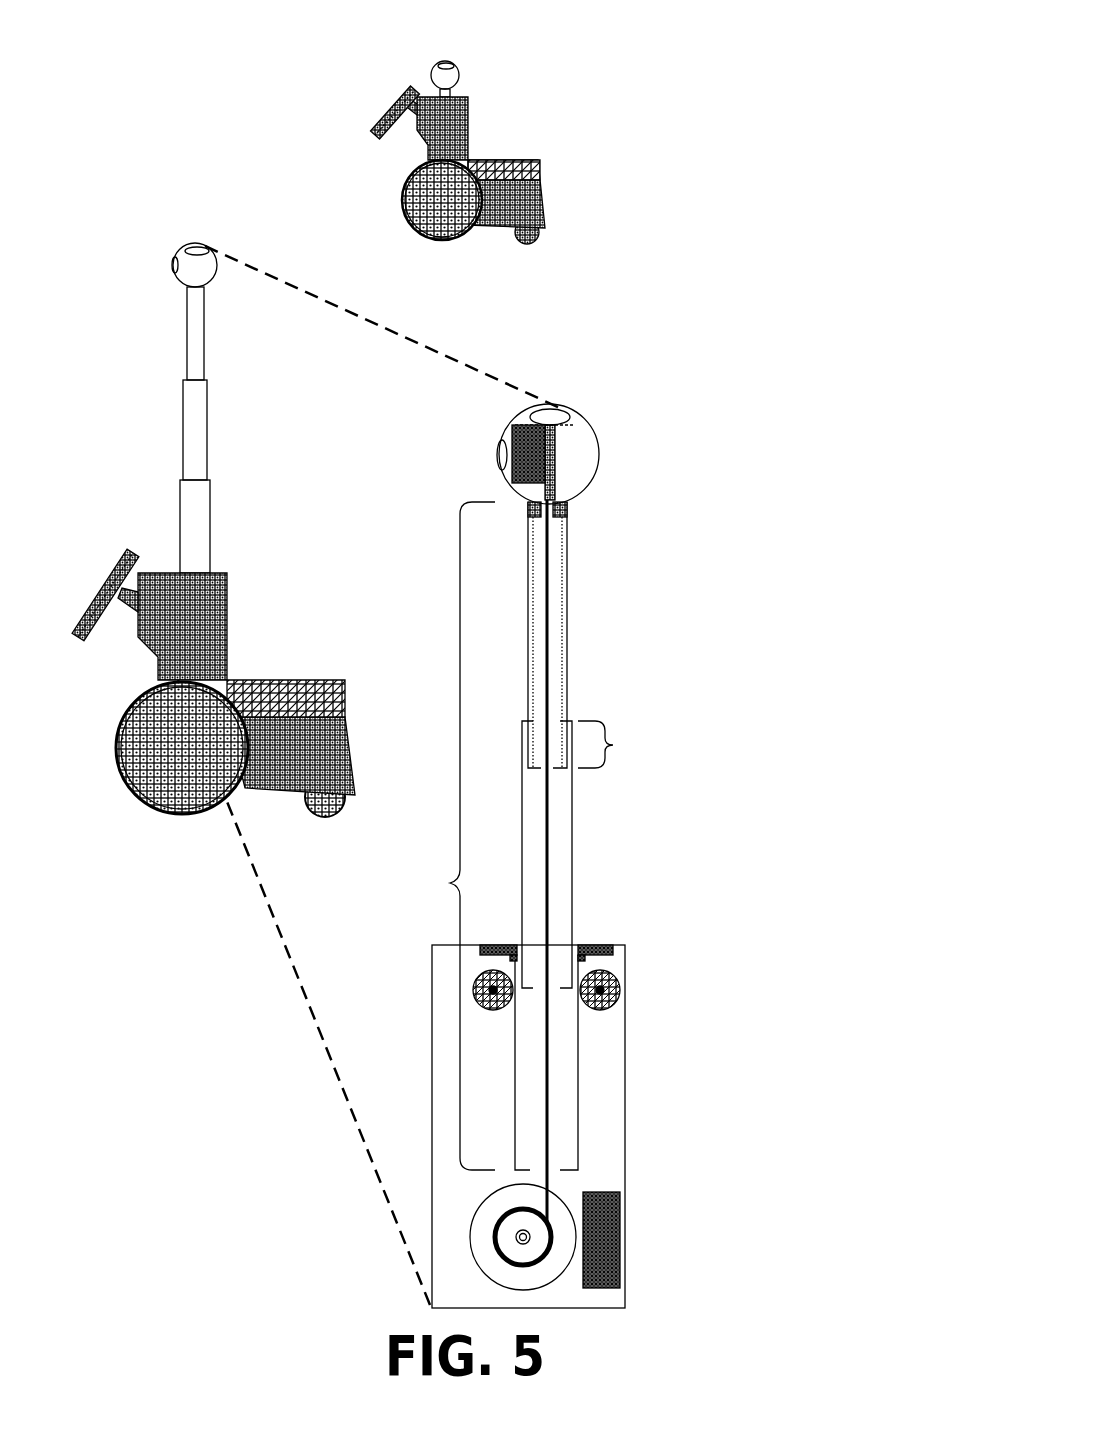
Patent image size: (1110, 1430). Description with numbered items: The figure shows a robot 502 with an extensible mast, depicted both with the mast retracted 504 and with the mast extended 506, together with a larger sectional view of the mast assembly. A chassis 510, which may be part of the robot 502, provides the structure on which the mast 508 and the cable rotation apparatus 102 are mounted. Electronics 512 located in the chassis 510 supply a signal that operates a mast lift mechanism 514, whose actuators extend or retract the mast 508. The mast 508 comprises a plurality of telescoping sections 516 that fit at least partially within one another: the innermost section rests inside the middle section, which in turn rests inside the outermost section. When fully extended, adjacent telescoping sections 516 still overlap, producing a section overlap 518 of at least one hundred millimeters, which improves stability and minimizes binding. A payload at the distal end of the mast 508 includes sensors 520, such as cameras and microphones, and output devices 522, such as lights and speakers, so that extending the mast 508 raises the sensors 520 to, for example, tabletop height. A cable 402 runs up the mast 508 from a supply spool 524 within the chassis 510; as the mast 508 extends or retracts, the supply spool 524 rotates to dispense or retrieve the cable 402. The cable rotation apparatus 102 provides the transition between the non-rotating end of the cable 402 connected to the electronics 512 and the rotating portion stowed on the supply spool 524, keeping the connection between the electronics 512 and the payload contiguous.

The cable rotation apparatus 102 is at (466, 846).
The cable 402 is at (548, 565).
The robot 502 is at (301, 408).
The mast retracted 504 is at (318, 48).
The mast extended 506 is at (194, 352).
The mast 508 is at (271, 408).
The chassis 510 is at (625, 1168).
The electronics 512 is at (607, 1240).
The mast lift mechanism 514 is at (600, 990).
The telescoping sections 516 is at (580, 836).
The section overlap 518 is at (671, 747).
The sensors 520 is at (540, 470).
The output devices 522 is at (560, 412).
The supply spool 524 is at (530, 1260).